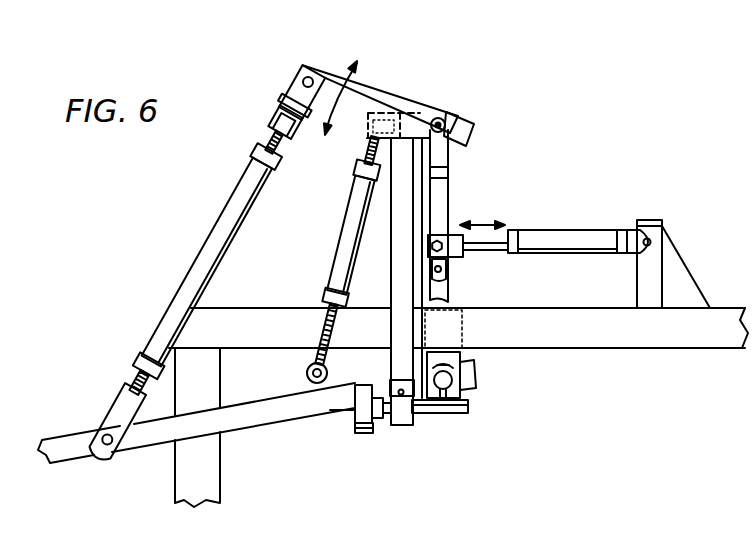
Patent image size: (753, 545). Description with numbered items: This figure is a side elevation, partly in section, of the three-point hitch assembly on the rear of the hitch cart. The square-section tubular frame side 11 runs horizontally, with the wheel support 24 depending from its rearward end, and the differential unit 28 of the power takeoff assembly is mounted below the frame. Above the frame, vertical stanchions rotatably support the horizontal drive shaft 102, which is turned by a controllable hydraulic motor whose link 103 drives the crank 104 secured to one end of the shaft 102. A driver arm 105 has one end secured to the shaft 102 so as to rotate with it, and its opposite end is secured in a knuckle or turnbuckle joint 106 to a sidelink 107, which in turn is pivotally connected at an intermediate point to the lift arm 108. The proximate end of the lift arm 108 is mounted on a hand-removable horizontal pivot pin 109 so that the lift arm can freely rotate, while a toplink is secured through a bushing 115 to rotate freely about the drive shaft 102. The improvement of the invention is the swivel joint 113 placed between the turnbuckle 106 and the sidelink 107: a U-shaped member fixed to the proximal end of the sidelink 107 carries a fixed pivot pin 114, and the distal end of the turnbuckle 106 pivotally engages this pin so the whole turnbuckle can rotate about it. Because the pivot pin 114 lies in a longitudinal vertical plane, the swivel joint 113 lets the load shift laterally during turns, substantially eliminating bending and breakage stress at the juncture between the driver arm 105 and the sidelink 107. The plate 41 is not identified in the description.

The side 11 is at (627, 330).
The wheel support 24 is at (180, 484).
The differential unit 28 is at (373, 430).
The mounting plate 41 is at (343, 420).
The horizontal drive shaft 102 is at (446, 118).
The link 103 is at (585, 230).
The crank 104 is at (437, 193).
The driver arm 105 is at (368, 95).
The turnbuckle joint 106 is at (300, 88).
The sidelink 107 is at (236, 228).
The lift arm 108 is at (250, 426).
The pivot pin 109 is at (468, 382).
The swivel joint 113 is at (268, 127).
The pivot pin 114 is at (280, 98).
The bushing 115 is at (392, 108).